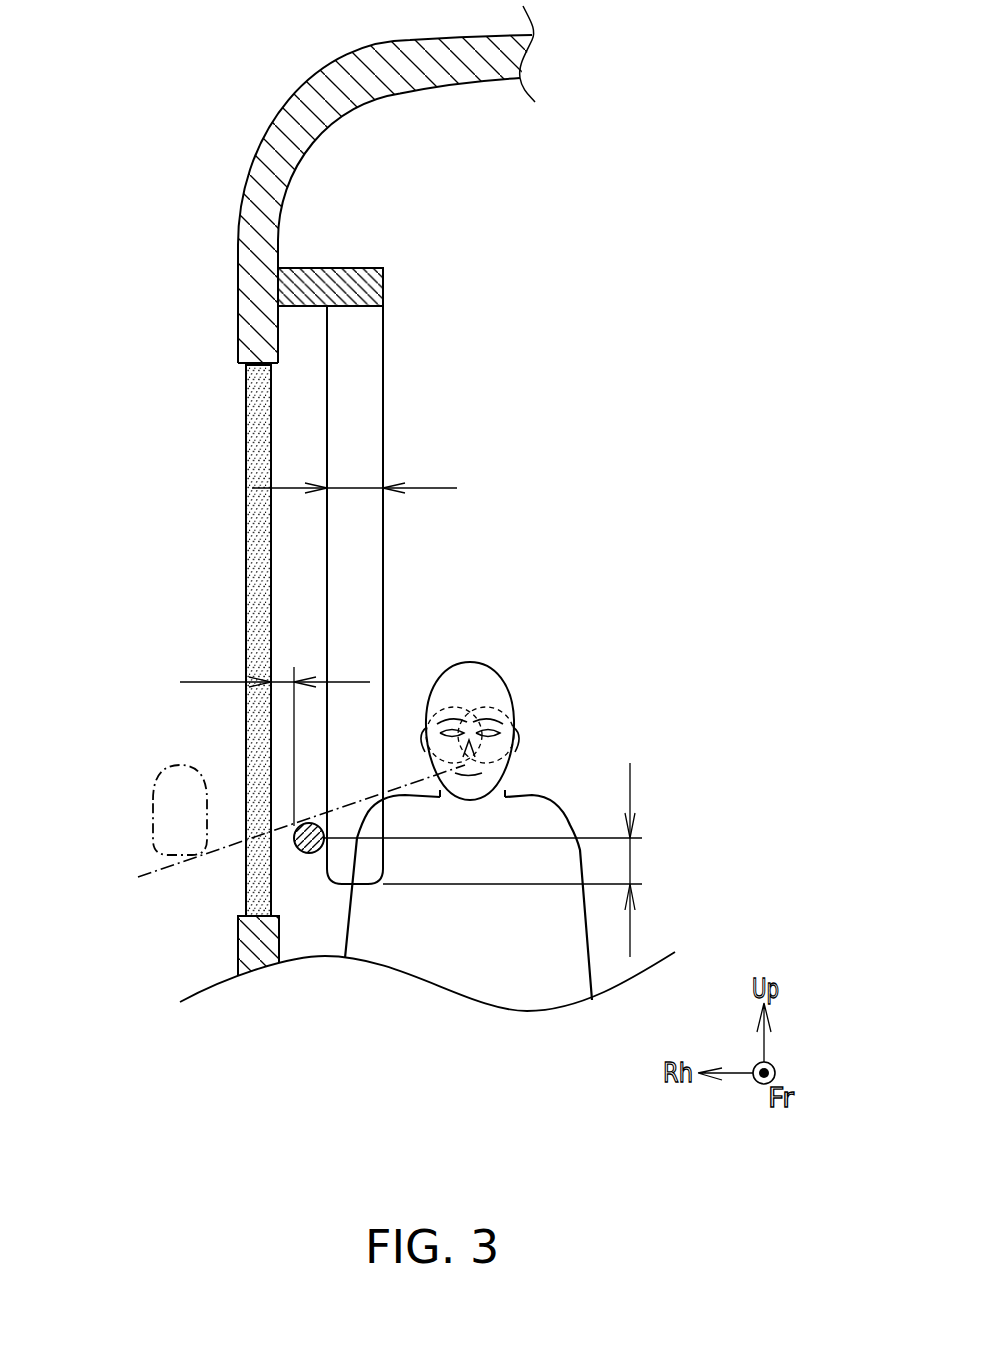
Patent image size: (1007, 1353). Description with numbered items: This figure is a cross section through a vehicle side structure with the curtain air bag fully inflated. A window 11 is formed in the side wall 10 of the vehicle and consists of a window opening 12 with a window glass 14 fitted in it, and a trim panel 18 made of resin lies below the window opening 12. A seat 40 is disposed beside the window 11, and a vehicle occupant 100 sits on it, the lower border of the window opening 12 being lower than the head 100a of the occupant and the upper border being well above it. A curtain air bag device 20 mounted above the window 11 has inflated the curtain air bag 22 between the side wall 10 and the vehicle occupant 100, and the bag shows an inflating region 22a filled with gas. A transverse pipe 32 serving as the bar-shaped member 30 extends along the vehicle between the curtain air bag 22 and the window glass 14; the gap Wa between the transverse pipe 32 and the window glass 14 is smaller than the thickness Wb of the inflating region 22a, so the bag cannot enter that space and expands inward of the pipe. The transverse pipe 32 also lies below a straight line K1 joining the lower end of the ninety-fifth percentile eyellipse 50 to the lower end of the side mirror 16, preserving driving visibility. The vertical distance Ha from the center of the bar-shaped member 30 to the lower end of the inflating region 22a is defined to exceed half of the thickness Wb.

The side wall 10 is at (238, 299).
The window 11 is at (208, 710).
The window opening 12 is at (246, 367).
The window glass 14 is at (246, 579).
The side mirror 16 is at (172, 772).
The trim panel 18 is at (279, 933).
The curtain air bag device 20 is at (430, 635).
The curtain air bag 22 is at (413, 576).
The inflating region 22a is at (383, 352).
The bar-shaped member 30 is at (372, 855).
The transverse pipe 32 is at (309, 853).
The seat 40 is at (557, 800).
The 95th percentile eyellipse 50 is at (500, 702).
The vehicle occupant 100 is at (516, 806).
The head 100a is at (506, 686).
The straight line K1 is at (286, 828).
The gap Wa is at (275, 667).
The thickness Wb is at (354, 472).
The vertical distance Ha is at (482, 860).